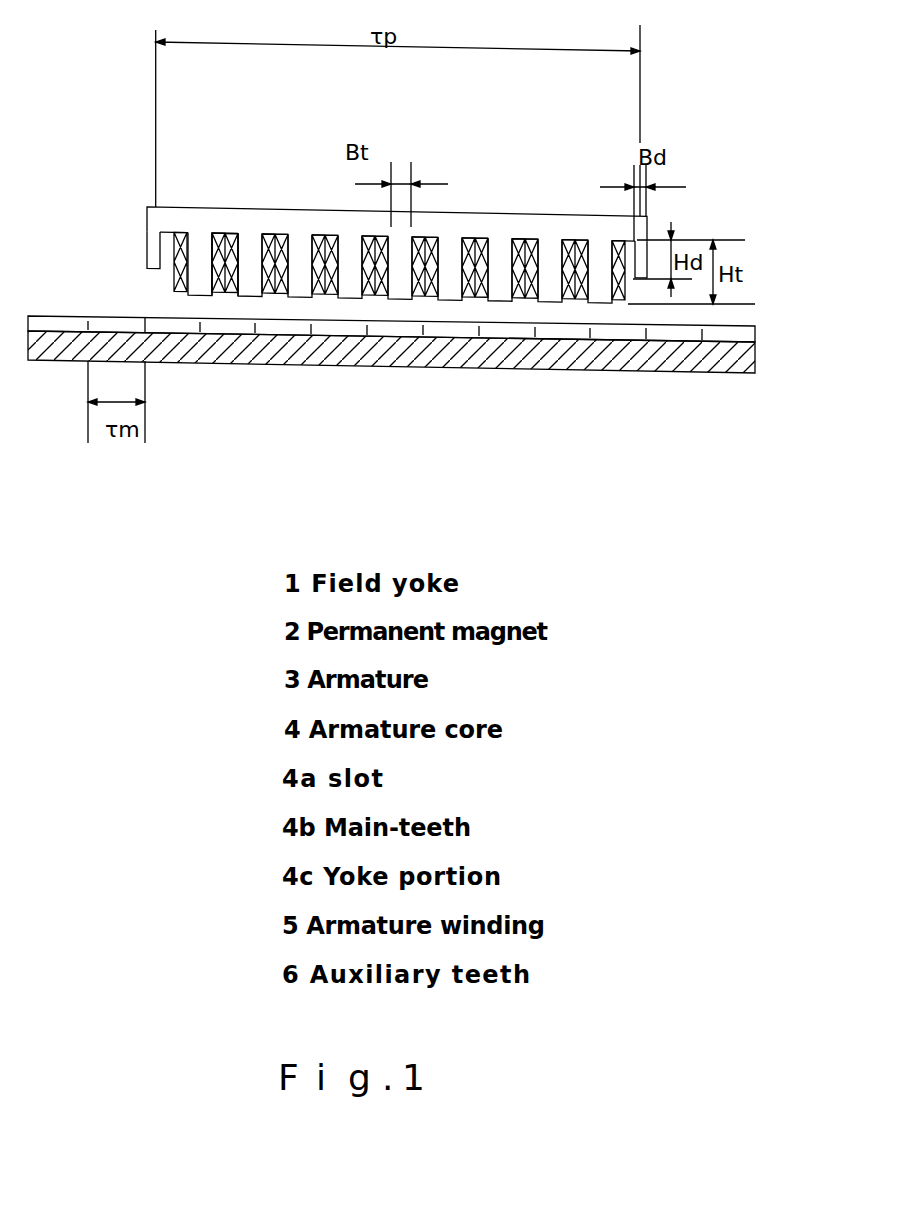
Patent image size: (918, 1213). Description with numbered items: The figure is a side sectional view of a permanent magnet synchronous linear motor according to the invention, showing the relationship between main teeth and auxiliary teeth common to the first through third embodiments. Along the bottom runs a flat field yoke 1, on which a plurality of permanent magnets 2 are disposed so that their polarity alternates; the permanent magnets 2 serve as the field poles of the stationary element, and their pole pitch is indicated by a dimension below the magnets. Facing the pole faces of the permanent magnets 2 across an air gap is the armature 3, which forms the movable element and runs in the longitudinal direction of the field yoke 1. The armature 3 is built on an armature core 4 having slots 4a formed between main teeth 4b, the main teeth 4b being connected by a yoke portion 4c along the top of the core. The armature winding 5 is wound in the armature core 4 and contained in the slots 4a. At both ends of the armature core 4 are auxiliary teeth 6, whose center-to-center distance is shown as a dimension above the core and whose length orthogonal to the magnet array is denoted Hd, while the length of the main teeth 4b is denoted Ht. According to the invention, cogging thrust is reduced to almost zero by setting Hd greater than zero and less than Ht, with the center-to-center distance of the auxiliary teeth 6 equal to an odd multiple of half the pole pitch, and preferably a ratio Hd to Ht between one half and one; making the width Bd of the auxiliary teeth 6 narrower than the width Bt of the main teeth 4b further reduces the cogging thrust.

The field yoke 1 is at (467, 358).
The permanent magnets 2 is at (575, 333).
The armature 3 is at (418, 265).
The armature core 4 is at (440, 268).
The slot 4a is at (222, 250).
The main teeth 4b is at (400, 293).
The yoke portion 4c is at (527, 219).
The armature winding 5 is at (222, 250).
The auxiliary teeth 6 is at (147, 242).